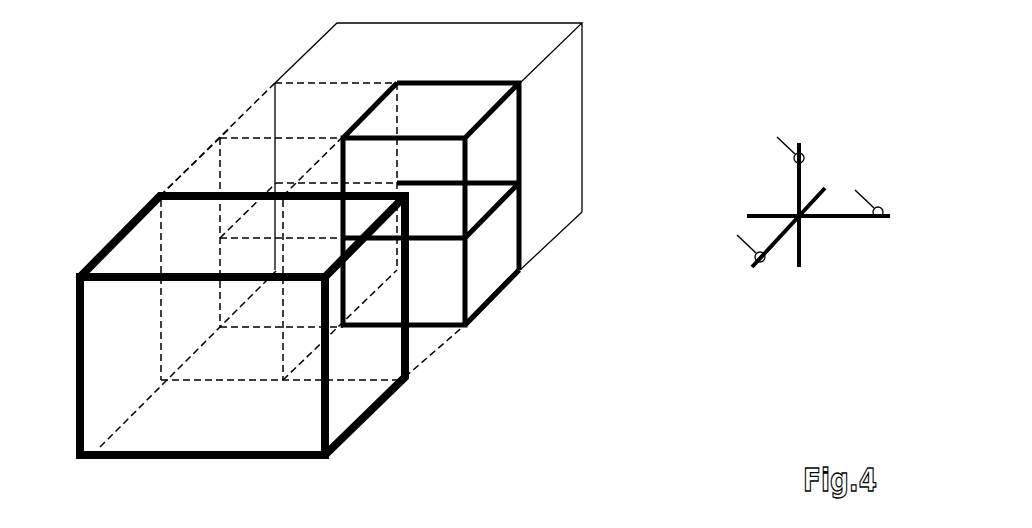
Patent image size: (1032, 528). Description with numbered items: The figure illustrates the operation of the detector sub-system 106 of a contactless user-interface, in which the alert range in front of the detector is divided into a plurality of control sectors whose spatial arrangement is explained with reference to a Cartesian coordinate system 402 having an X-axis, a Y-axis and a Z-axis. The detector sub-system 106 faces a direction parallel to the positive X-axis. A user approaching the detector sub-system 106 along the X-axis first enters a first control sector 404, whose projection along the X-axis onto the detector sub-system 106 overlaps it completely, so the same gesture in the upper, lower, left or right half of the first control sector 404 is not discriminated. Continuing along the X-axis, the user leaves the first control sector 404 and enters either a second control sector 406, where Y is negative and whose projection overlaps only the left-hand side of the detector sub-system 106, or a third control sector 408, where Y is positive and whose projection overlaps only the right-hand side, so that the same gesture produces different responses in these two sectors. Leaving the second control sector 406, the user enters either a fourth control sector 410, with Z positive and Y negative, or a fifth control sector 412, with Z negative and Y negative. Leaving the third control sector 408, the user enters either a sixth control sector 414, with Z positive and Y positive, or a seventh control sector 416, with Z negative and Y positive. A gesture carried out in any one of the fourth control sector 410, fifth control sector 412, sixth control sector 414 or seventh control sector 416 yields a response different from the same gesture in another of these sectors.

The detector sub-system 106 is at (612, 435).
The Cartesian coordinate system 402 is at (803, 206).
The first control sector 404 is at (111, 246).
The second control sector 406 is at (186, 161).
The third control sector 408 is at (444, 356).
The fourth control sector 410 is at (242, 104).
The fifth control sector 412 is at (243, 303).
The sixth control sector 414 is at (490, 125).
The seventh control sector 416 is at (501, 299).